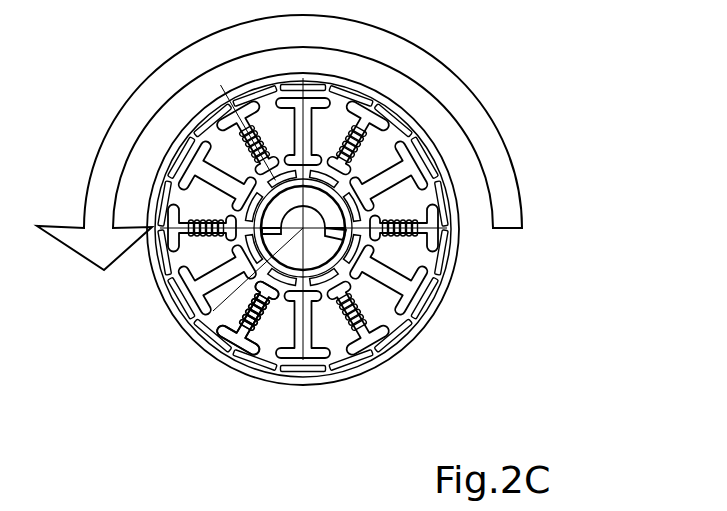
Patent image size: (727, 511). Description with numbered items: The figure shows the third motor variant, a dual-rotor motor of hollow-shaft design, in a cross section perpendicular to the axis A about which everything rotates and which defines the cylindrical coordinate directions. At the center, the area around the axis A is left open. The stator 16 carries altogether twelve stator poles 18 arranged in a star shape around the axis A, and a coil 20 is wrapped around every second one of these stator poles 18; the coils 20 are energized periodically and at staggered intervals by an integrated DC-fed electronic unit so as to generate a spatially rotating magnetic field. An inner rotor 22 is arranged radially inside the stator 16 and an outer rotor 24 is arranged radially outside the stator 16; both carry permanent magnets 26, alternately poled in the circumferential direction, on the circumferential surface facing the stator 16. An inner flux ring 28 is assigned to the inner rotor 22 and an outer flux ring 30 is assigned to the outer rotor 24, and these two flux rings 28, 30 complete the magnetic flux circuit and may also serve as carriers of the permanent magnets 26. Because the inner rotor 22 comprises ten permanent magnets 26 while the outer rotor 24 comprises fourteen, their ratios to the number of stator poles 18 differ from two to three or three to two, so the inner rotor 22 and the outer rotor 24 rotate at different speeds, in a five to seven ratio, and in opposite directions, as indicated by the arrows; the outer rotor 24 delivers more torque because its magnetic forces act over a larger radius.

The stator 16 is at (403, 238).
The stator poles 18 is at (255, 265).
The coil 20 is at (380, 305).
The inner rotor 22 is at (276, 298).
The outer rotor 24 is at (153, 297).
The permanent magnets 26 is at (432, 231).
The inner flux ring 28 is at (362, 270).
The outer flux ring 30 is at (393, 350).
The axis A is at (213, 311).